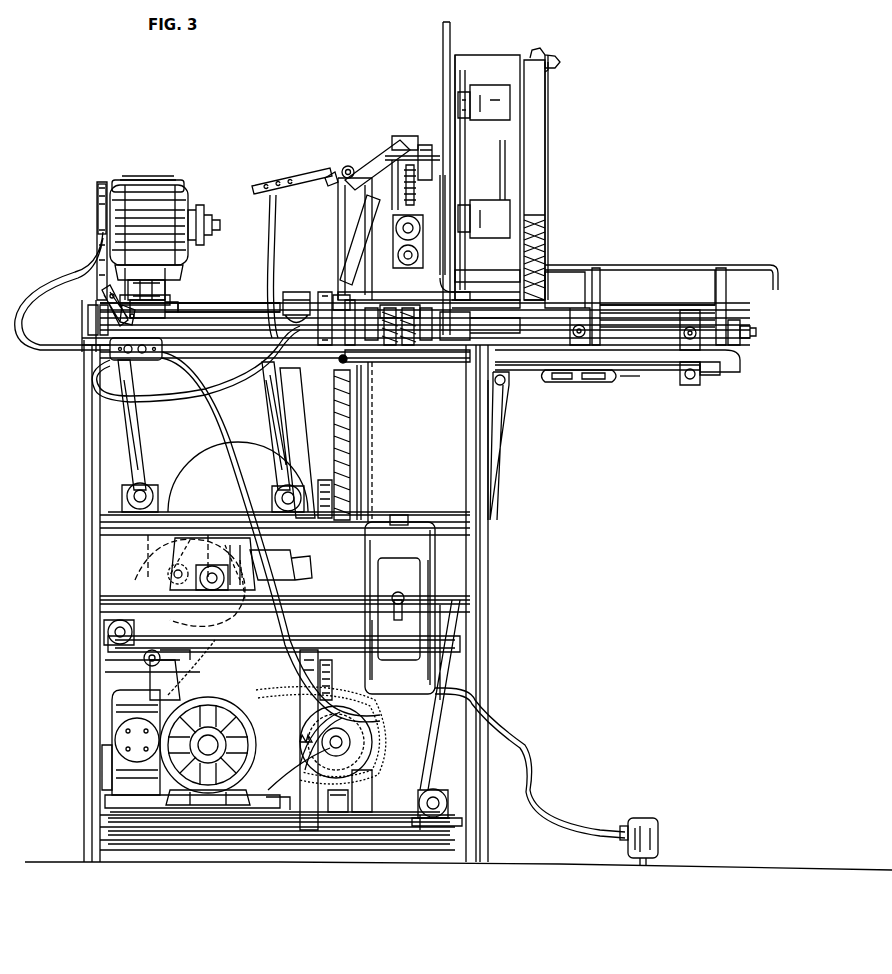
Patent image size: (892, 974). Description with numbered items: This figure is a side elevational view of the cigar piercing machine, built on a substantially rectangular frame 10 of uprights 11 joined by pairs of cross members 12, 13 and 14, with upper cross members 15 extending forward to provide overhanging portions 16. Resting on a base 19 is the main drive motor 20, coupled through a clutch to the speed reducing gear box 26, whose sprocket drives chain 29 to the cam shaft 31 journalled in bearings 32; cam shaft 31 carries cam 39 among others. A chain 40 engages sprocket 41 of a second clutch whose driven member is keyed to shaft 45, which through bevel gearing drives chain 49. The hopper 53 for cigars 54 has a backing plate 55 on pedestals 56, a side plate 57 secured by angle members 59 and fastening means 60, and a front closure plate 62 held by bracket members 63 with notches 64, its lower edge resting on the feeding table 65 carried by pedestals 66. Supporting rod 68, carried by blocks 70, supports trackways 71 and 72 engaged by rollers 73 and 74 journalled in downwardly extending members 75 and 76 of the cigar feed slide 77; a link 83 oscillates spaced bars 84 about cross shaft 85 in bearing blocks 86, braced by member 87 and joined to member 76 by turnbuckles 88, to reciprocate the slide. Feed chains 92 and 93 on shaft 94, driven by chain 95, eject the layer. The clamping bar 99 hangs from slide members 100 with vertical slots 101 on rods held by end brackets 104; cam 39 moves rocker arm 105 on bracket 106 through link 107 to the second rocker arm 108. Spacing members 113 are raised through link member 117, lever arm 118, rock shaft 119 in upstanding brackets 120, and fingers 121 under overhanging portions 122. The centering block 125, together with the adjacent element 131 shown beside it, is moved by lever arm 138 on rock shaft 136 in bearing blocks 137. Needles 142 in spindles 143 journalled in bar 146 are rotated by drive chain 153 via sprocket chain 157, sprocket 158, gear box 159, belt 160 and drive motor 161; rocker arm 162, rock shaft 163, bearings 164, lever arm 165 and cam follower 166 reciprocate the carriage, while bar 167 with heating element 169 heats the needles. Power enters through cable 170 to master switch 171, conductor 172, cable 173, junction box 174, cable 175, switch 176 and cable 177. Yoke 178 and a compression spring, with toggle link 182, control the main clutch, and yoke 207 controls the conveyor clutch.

The frame 10 is at (78, 459).
The uprights 11 is at (92, 577).
The cross members 12 is at (228, 842).
The cross members 13 is at (100, 600).
The cross members 14 is at (100, 520).
The upper cross members 15 is at (440, 364).
The overhanging portions 16 is at (720, 375).
The base 19 is at (142, 805).
The main drive motor 20 is at (238, 700).
The speed reducing gear box 26 is at (118, 718).
The chain 29 is at (145, 683).
The cam shaft 31 is at (222, 592).
The bearings 32 is at (196, 590).
The cam 39 is at (264, 590).
The chain 40 is at (272, 706).
The sprocket 41 is at (300, 765).
The shaft 45 is at (340, 742).
The chain 49 is at (325, 500).
The hopper 53 is at (562, 121).
The cigars 54 is at (548, 220).
The backing plate 55 is at (455, 66).
The pedestals 56 is at (342, 292).
The side plate 57 is at (525, 172).
The angle members 59 is at (488, 116).
The screw threaded fastening means 60 is at (462, 98).
The front closure plate 62 is at (552, 148).
The bracket members 63 is at (540, 52).
The notches 64 is at (560, 66).
The feeding table 65 is at (694, 266).
The pedestals 66 is at (598, 268).
The supporting rod 68 is at (752, 340).
The blocks 70 is at (90, 313).
The trackway 71 is at (660, 345).
The trackway 72 is at (654, 325).
The roller 73 is at (576, 385).
The roller 74 is at (708, 380).
The downwardly extending member 75 is at (578, 310).
The downwardly extending member 76 is at (693, 390).
The cigar feed slide 77 is at (690, 308).
The link 83 is at (450, 585).
The spaced bars 84 is at (500, 412).
The cross shaft 85 is at (450, 800).
The bearing blocks 86 is at (458, 815).
The cross bracing member 87 is at (492, 452).
The turnbuckles 88 is at (616, 382).
The feed chain 92 is at (392, 348).
The feed chain 93 is at (408, 348).
The shaft 94 is at (407, 355).
The chain 95 is at (376, 445).
The clamping bar 99 is at (395, 285).
The slide members 100 is at (400, 206).
The vertical slots 101 is at (428, 150).
The end brackets 104 is at (418, 222).
The rocker arm 105 is at (272, 640).
The bracket 106 is at (108, 632).
The link 107 is at (360, 418).
The second rocker arm 108 is at (347, 224).
The spacing members 113 is at (448, 272).
The link member 117 is at (298, 452).
The lever arm 118 is at (292, 172).
The rock shaft 119 is at (340, 170).
The upstanding brackets 120 is at (342, 210).
The fingers 121 is at (385, 156).
The overhanging portions 122 is at (400, 135).
The block 125 is at (338, 300).
The block 131 is at (318, 292).
The rock shaft 136 is at (278, 492).
The bearing blocks 137 is at (250, 500).
The lever arm 138 is at (272, 437).
The needles 142 is at (233, 303).
The spindles 143 is at (166, 300).
The bar 146 is at (168, 284).
The drive chain 153 is at (100, 272).
The sprocket chain 157 is at (100, 186).
The sprocket 158 is at (96, 192).
The speed reducing gear box 159 is at (138, 182).
The belt 160 is at (204, 216).
The drive motor 161 is at (172, 198).
The rocker arm 162 is at (138, 452).
The rock shaft 163 is at (160, 500).
The bearings 164 is at (162, 506).
The lever arm 165 is at (164, 545).
The cam follower 166 is at (174, 570).
The bar 167 is at (300, 292).
The heating element 169 is at (270, 310).
The cable 170 is at (526, 740).
The master switch 171 is at (422, 525).
The conductor 172 is at (285, 780).
The cable 173 is at (220, 430).
The junction box and control switch 174 is at (152, 360).
The cable 175 is at (70, 264).
The switch 176 is at (115, 350).
The cable 177 is at (230, 385).
The yoke 178 is at (192, 676).
The link 182 is at (190, 645).
The yoke 207 is at (352, 792).